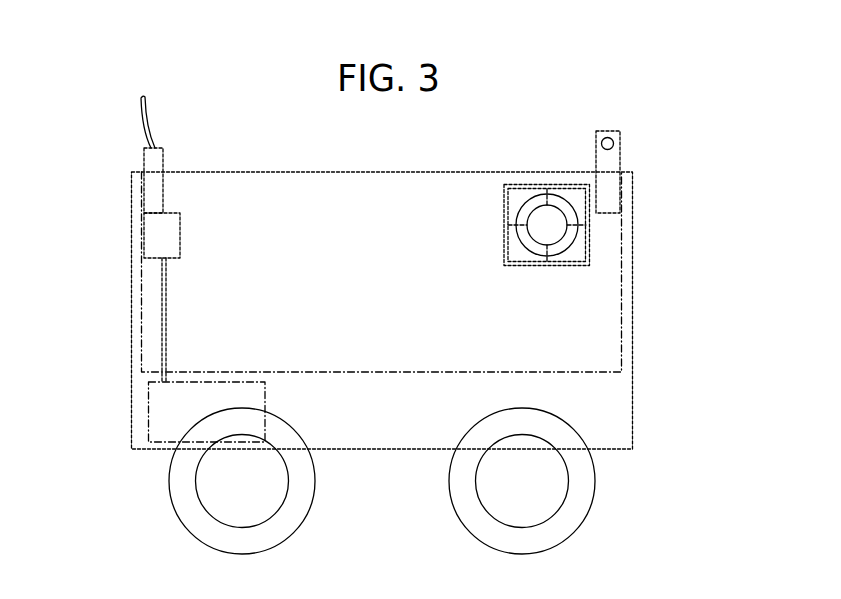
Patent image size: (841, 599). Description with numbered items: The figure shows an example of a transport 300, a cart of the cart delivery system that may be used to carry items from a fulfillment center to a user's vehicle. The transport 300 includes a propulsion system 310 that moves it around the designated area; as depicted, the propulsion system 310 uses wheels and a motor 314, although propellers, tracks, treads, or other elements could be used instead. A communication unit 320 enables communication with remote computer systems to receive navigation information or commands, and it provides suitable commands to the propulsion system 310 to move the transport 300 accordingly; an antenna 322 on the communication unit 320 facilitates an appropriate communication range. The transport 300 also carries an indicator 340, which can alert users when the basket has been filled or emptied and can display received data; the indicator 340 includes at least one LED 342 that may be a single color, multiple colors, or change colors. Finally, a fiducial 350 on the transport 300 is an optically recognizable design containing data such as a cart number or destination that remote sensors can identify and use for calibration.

The transport 300 is at (563, 72).
The propulsion system 310 is at (84, 388).
The motor 314 is at (265, 397).
The communication unit 320 is at (84, 99).
The antenna 322 is at (155, 130).
The indicator 340 is at (620, 163).
The LED 342 is at (615, 144).
The fiducial 350 is at (590, 250).